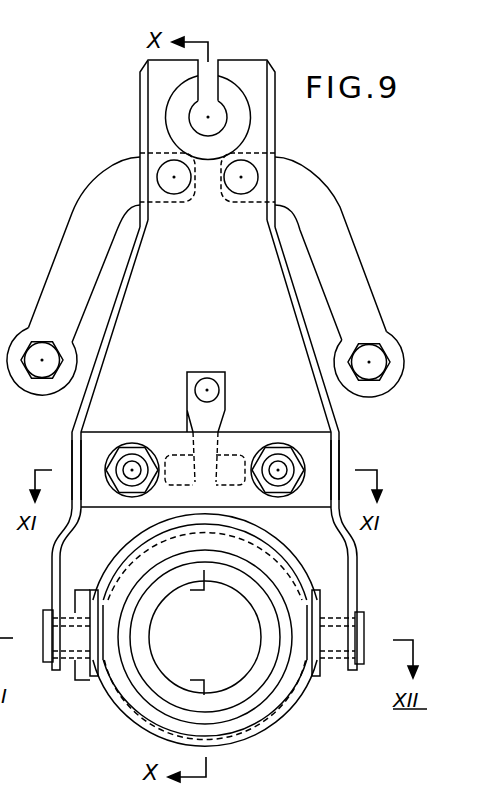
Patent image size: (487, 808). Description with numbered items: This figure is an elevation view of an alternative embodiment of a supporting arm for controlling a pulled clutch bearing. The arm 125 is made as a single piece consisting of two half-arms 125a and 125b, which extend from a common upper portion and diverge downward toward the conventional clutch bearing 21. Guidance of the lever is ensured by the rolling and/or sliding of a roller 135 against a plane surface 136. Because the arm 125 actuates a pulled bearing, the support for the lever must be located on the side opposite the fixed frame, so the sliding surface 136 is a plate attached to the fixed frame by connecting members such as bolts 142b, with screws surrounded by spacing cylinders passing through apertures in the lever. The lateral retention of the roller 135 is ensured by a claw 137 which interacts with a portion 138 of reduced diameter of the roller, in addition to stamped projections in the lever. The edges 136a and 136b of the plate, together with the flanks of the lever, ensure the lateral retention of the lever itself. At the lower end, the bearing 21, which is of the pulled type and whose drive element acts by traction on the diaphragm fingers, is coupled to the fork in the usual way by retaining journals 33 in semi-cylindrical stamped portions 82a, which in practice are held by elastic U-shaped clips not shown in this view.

The arm 125 is at (344, 207).
The half-arm 125a is at (72, 229).
The half-arm 125b is at (352, 250).
The plane surface 136 is at (240, 442).
The edge 136a is at (82, 455).
The edge 136b is at (333, 466).
The bolt 142b is at (297, 461).
The claw 137 is at (223, 394).
The roller 135 is at (180, 450).
The portion of reduced diameter 138 is at (207, 476).
The clutch bearing 21 is at (272, 722).
The semi-cylindrical stamped portion 82a is at (72, 643).
The journal 33 is at (68, 616).